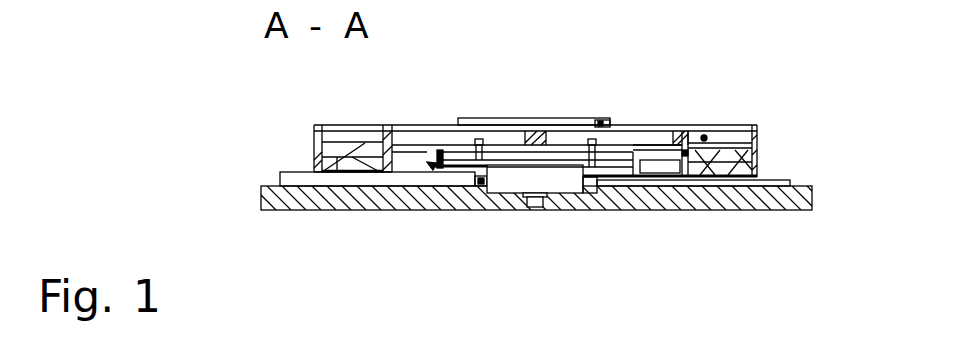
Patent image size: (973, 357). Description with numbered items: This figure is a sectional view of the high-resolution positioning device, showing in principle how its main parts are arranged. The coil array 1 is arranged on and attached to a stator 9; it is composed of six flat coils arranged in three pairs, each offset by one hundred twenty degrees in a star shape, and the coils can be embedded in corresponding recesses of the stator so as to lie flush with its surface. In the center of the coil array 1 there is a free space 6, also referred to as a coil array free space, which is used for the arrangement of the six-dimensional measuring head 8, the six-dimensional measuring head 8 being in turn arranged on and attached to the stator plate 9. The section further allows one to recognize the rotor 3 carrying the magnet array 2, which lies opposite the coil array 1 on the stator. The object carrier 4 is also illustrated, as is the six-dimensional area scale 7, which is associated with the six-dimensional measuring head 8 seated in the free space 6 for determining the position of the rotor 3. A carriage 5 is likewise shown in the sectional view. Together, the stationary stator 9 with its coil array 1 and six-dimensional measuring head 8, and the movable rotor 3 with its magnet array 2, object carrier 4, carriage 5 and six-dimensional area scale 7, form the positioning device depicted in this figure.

The coil array 1 is at (730, 188).
The magnet array 2 is at (312, 160).
The rotor 3 is at (690, 175).
The object carrier 4 is at (593, 122).
The carriage 5 is at (655, 165).
The free space 6 is at (478, 187).
The 6D area scale 7 is at (430, 164).
The 6D measuring head 8 is at (562, 181).
The stator 9 is at (290, 198).